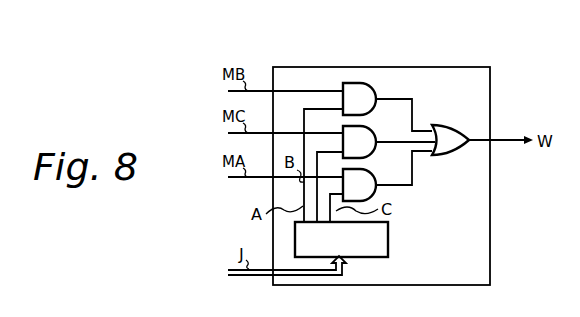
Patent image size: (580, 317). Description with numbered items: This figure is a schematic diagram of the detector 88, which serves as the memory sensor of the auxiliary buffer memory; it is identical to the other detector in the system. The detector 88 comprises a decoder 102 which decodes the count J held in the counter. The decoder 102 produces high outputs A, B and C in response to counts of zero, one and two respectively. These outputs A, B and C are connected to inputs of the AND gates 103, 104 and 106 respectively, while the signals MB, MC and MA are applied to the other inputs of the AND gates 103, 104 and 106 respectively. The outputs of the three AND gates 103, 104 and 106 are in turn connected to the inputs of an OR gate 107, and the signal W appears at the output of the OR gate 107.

The detector 88 is at (478, 65).
The decoder 102 is at (388, 250).
The AND gate 103 is at (377, 94).
The AND gate 104 is at (385, 133).
The AND gate 106 is at (388, 176).
The OR gate 107 is at (455, 156).